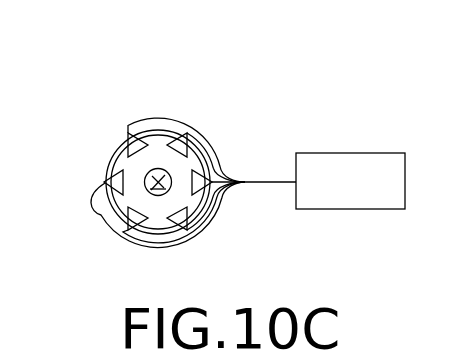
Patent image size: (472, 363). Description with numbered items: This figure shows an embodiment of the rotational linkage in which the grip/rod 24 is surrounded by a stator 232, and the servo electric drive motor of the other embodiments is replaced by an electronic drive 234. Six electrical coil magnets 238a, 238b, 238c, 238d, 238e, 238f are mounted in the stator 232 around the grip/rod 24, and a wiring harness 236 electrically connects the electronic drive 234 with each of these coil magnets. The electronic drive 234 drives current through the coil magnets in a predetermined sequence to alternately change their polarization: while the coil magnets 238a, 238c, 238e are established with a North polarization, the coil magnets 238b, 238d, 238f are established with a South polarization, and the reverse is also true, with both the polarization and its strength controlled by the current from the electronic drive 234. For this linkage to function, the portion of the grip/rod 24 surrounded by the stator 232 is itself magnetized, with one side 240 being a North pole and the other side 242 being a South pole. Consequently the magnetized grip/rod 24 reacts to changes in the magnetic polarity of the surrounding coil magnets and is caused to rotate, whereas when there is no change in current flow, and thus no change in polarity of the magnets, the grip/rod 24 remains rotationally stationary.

The grip/rod 24 is at (145, 180).
The stator 232 is at (116, 154).
The electronic drive 234 is at (348, 175).
The wiring harness 236 is at (252, 180).
The electrical coil magnet 238a is at (181, 131).
The electrical coil magnet 238b is at (127, 131).
The electrical coil magnet 238c is at (100, 210).
The electrical coil magnet 238d is at (126, 232).
The electrical coil magnet 238e is at (190, 233).
The electrical coil magnet 238f is at (212, 157).
The North pole side 240 is at (157, 168).
The South pole side 242 is at (170, 189).